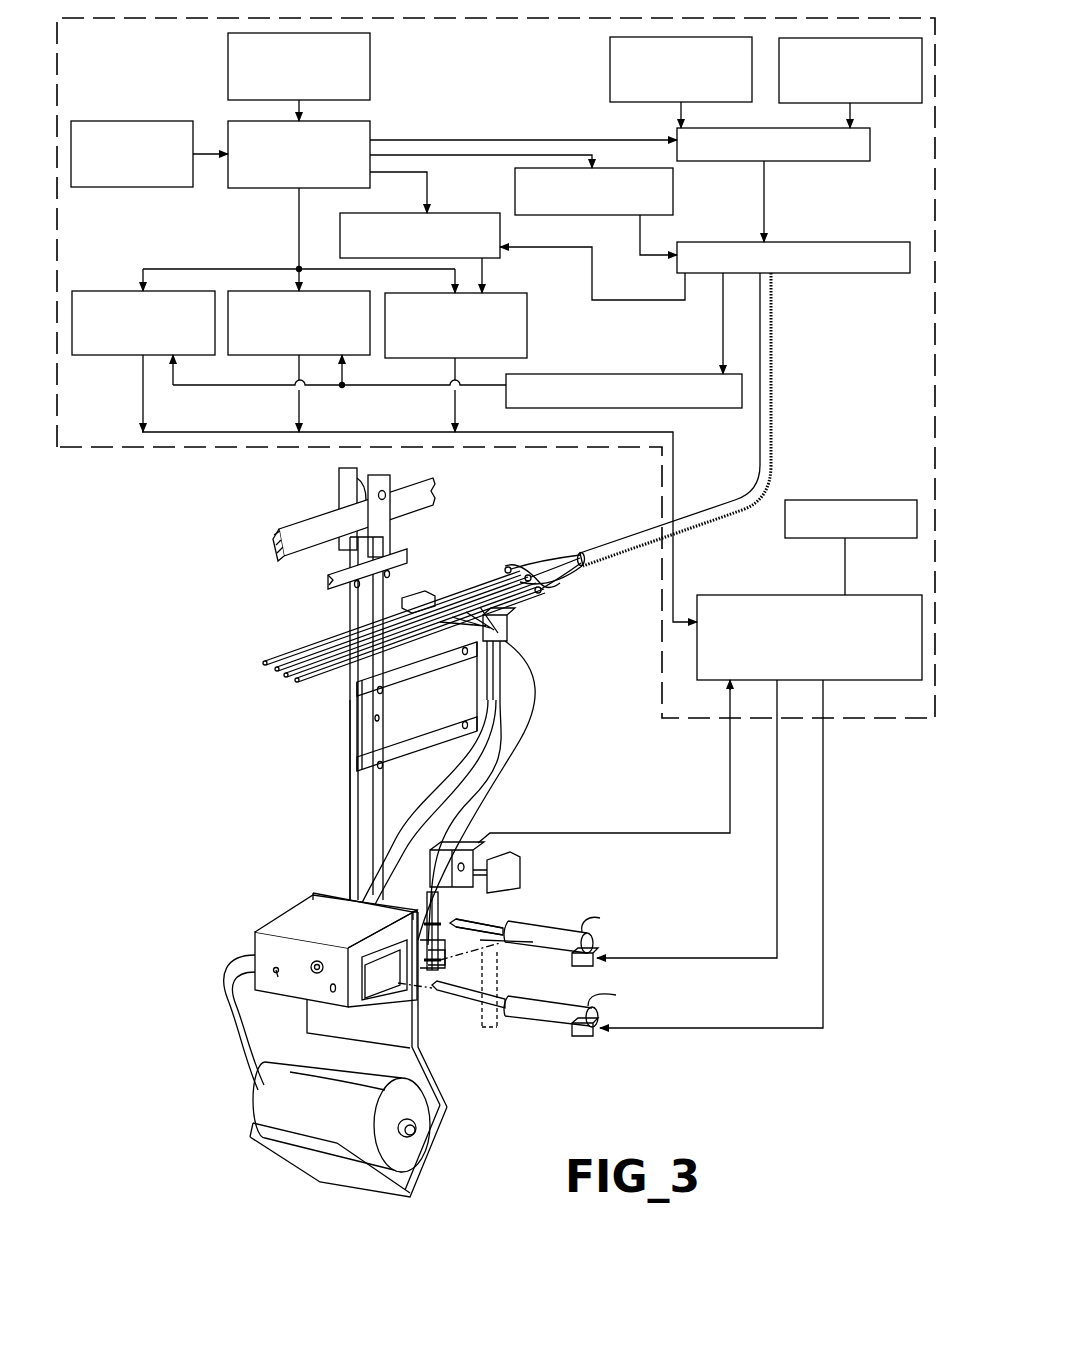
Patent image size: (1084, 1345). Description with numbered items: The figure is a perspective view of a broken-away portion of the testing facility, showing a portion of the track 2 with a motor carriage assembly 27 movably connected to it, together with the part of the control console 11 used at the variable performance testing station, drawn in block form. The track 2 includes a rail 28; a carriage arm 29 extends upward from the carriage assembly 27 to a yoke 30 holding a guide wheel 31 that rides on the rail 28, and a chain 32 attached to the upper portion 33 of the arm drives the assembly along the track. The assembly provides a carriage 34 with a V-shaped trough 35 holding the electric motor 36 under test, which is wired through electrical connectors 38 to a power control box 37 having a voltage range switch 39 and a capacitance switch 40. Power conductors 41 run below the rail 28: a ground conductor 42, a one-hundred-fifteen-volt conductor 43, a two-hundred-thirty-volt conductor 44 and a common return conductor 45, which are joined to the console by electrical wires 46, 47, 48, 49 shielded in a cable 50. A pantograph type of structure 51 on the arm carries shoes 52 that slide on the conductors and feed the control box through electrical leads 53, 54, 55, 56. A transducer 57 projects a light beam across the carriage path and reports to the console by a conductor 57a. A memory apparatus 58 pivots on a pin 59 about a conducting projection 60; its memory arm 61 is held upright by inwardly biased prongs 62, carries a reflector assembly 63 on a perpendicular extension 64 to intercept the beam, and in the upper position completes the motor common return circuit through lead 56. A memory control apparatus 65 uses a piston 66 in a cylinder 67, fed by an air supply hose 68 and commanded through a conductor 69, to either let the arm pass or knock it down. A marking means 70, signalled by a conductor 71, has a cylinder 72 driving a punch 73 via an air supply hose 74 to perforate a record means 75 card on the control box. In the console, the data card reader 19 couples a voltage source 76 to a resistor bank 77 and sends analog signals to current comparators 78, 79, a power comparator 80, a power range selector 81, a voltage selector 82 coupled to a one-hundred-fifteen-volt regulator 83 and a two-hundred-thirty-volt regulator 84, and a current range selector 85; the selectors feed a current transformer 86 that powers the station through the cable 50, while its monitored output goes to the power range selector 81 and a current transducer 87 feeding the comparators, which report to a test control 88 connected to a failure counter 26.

The track 2 is at (262, 527).
The control console 11 is at (156, 447).
The data card reader 19 is at (358, 131).
The counter 26 is at (838, 500).
The motor carriage assembly 27 is at (270, 893).
The rail 28 is at (300, 524).
The carriage arm 29 is at (350, 805).
The yoke 30 is at (392, 530).
The guide wheel 31 is at (345, 488).
The chain 32 is at (328, 591).
The upper portion 33 is at (350, 558).
The carriage 34 is at (442, 1083).
The V-shaped trough 35 is at (408, 1198).
The electric motor 36 is at (270, 1102).
The power control box 37 is at (280, 927).
The electrical connectors 38 is at (257, 1040).
The switch 39 is at (272, 970).
The switch 40 is at (313, 974).
The power conductors 41 is at (541, 594).
The conductor 42 is at (265, 660).
The conductor 43 is at (278, 668).
The conductor 44 is at (287, 675).
The conductor 45 is at (299, 683).
The electrical wire 46 is at (506, 566).
The electrical wire 47 is at (529, 574).
The electrical wire 48 is at (542, 586).
The electrical wire 49 is at (562, 580).
The cable 50 is at (644, 540).
The pantograph type of structure 51 is at (509, 622).
The shoes 52 is at (440, 638).
The electrical lead 53 is at (440, 768).
The electrical lead 54 is at (430, 792).
The electrical lead 55 is at (496, 740).
The electrical lead 56 is at (487, 771).
The transducer 57 is at (462, 850).
The conductor 57a is at (682, 833).
The memory apparatus 58 is at (523, 870).
The pin 59 is at (442, 962).
The projection 60 is at (428, 963).
The memory arm 61 is at (440, 914).
The prongs 62 is at (462, 925).
The reflector assembly 63 is at (540, 845).
The perpendicular extension 64 is at (482, 865).
The memory control apparatus 65 is at (550, 922).
The piston 66 is at (500, 930).
The cylinder 67 is at (552, 950).
The air supply hose 68 is at (603, 917).
The conductor 69 is at (700, 960).
The marking means 70 is at (578, 1005).
The conductor 71 is at (700, 1030).
The cylinder 72 is at (562, 1026).
The punch 73 is at (468, 995).
The air supply hose 74 is at (612, 996).
The record means 75 is at (377, 995).
The voltage source 76 is at (148, 120).
The resistor bank 77 is at (228, 48).
The current comparator 78 is at (105, 291).
The current comparator 79 is at (258, 291).
The power comparator 80 is at (520, 306).
The power range selector 81 is at (460, 213).
The voltage selector 82 is at (840, 162).
The 115 volt regulator 83 is at (610, 91).
The 230 volt regulator 84 is at (896, 103).
The current range selector 85 is at (673, 200).
The current transformer 86 is at (832, 273).
The current transducer 87 is at (668, 360).
The test control 88 is at (866, 680).